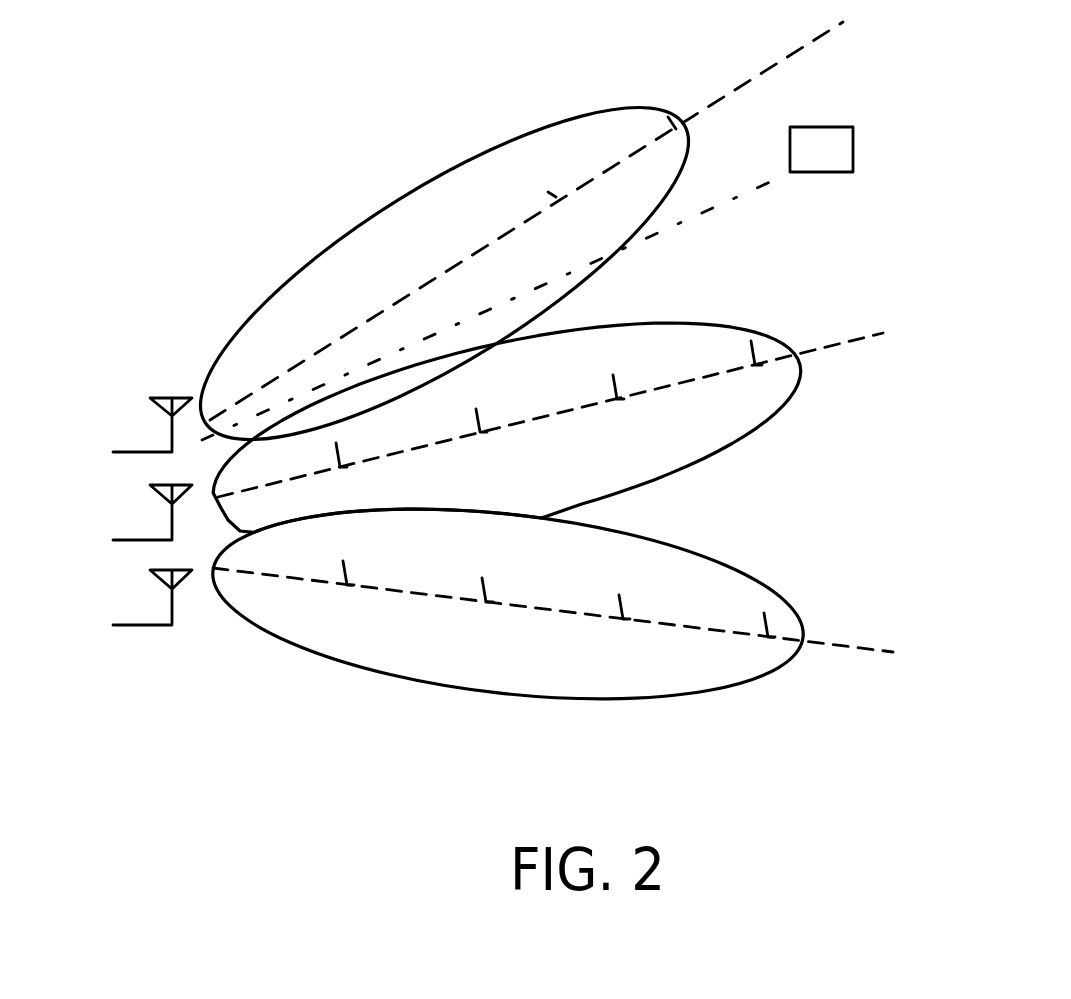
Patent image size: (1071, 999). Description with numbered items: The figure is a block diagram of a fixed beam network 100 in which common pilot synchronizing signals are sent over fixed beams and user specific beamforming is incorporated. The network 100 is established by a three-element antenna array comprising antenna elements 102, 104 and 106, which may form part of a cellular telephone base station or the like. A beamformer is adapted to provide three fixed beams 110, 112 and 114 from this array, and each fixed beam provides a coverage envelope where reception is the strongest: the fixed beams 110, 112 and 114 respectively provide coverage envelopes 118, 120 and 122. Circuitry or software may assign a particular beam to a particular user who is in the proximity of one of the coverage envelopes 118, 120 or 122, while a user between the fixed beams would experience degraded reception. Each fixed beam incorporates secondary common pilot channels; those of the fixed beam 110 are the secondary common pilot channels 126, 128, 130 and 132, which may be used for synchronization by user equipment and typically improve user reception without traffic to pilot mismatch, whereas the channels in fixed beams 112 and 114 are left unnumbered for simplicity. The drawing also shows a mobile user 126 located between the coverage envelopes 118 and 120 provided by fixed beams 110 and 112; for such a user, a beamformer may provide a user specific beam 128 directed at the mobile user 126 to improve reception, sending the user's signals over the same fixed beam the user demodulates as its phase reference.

The fixed beam network 100 is at (580, 800).
The antenna element 102 is at (126, 418).
The antenna element 104 is at (126, 511).
The antenna element 106 is at (126, 597).
The fixed beam 110 is at (526, 210).
The fixed beam 112 is at (567, 388).
The fixed beam 114 is at (567, 606).
The coverage envelope 118 is at (444, 273).
The coverage envelope 120 is at (507, 403).
The coverage envelope 122 is at (508, 604).
The secondary common pilot channel / mobile user 126 is at (611, 217).
The secondary common pilot channel / user specific beam 128 is at (513, 311).
The secondary common pilot channel 130 is at (584, 160).
The secondary common pilot channel 132 is at (633, 93).